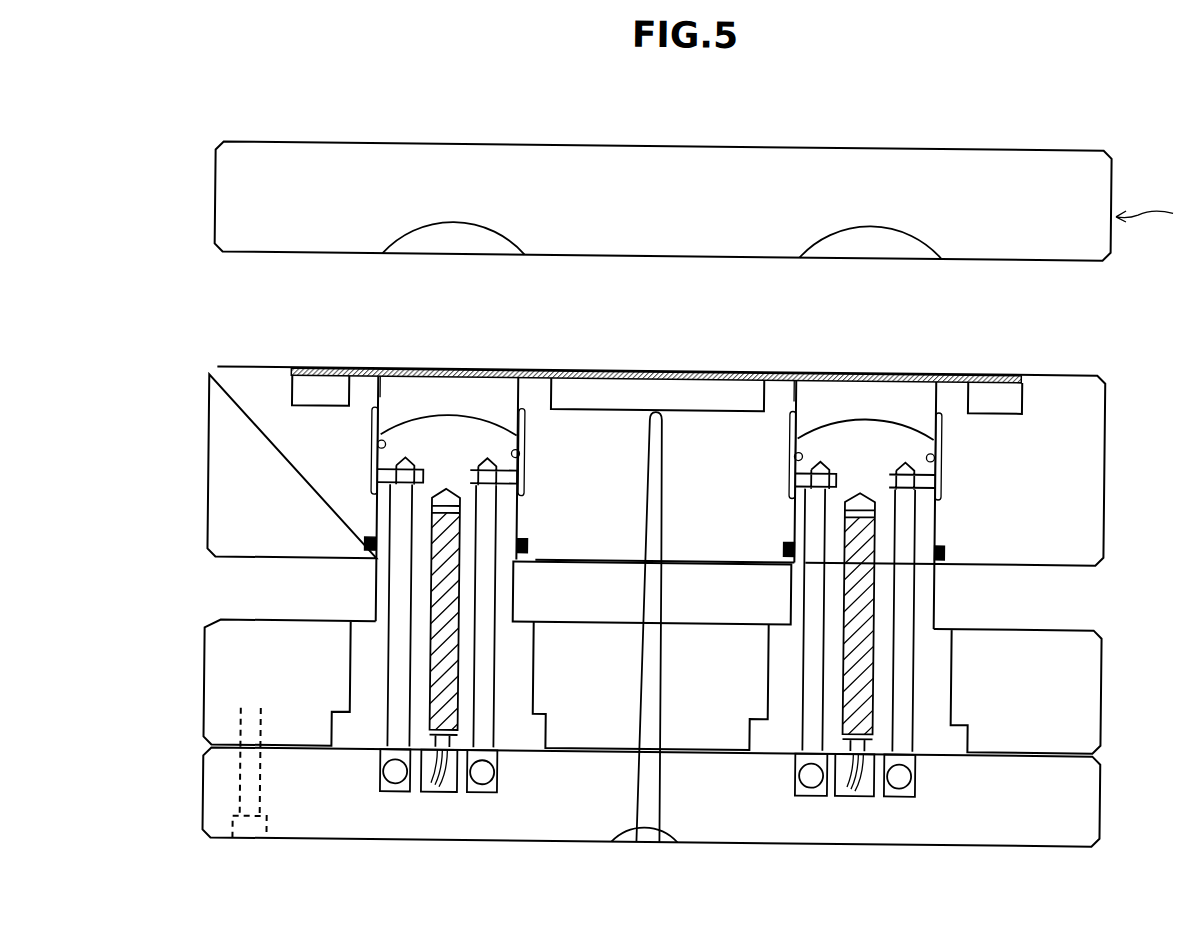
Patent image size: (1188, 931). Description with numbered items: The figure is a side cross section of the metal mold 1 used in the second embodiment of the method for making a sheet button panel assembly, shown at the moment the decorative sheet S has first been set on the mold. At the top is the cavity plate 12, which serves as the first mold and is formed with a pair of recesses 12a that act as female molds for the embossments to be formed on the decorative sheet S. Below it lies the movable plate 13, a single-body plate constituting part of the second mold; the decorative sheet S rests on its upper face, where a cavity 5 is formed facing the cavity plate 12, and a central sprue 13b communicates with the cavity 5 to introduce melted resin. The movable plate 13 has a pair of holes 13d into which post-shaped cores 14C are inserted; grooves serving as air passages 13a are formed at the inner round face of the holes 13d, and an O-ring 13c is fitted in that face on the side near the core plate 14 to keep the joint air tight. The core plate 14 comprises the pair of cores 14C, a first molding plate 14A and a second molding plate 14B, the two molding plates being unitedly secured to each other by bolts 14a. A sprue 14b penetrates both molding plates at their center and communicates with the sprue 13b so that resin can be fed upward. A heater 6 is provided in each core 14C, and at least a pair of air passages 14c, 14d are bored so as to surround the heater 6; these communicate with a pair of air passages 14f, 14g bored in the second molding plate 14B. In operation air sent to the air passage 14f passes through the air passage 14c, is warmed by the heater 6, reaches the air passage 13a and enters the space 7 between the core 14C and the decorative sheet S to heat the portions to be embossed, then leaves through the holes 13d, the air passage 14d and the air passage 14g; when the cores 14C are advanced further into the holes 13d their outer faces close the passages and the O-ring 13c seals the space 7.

The semiconductor device manufacturing apparatus 1 is at (1187, 211).
The cavity plate 12 is at (212, 200).
The recess 12a is at (440, 226).
The movable plate 13 is at (208, 460).
The air passage 13a is at (519, 457).
The sprue 13b is at (378, 450).
The O-ring 13c is at (366, 542).
The hole 13d is at (383, 396).
The cavity 5 is at (323, 396).
The space 7 is at (448, 396).
The decorative sheet S is at (857, 373).
The core plate 14 is at (206, 686).
The first molding plate 14A is at (206, 632).
The second molding plate 14B is at (206, 796).
The core 14C is at (515, 597).
The bolt 14a is at (253, 844).
The sprue 14b is at (661, 670).
The air passage 14c is at (911, 669).
The air passage 14d is at (392, 660).
The air passage 14f is at (490, 796).
The air passage 14g is at (402, 796).
The heater 6 is at (432, 702).